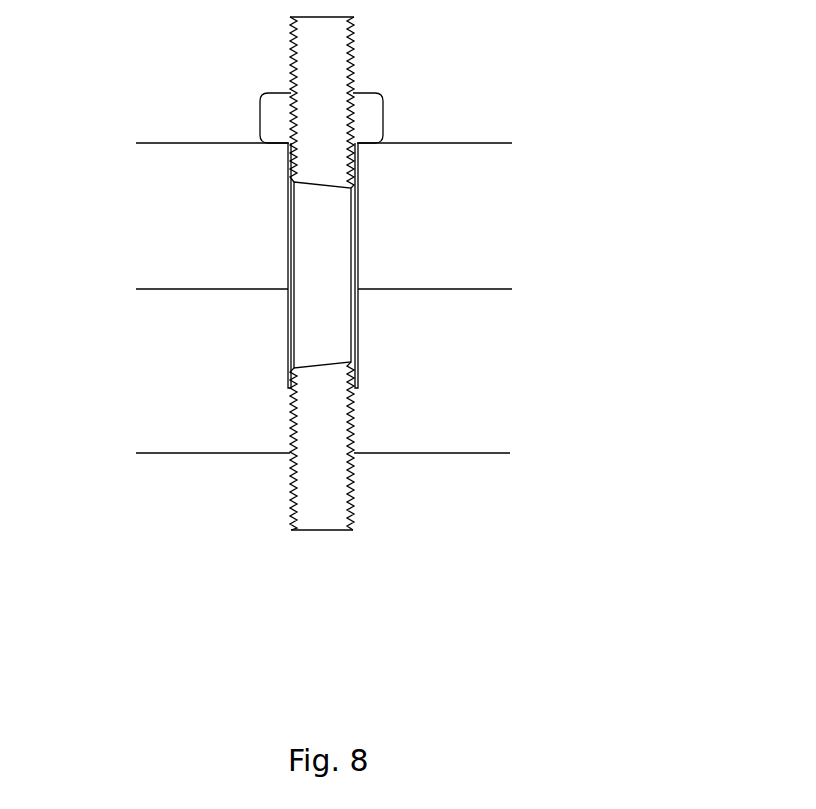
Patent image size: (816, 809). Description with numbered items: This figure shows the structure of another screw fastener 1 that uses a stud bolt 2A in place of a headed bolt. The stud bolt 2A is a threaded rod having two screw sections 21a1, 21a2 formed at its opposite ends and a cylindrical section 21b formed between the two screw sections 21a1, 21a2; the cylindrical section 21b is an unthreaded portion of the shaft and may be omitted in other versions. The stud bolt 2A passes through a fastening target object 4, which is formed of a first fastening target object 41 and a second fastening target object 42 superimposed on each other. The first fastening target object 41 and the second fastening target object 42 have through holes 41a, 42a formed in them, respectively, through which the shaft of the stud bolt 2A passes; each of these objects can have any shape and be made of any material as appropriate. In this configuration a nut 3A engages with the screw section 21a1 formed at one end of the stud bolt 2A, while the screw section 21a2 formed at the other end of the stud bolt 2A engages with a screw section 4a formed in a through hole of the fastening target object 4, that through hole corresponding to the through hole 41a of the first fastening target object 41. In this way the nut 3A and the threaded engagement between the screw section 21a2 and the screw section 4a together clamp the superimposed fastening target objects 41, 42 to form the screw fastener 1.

The screw fastener 1 is at (136, 54).
The stud bolt 2A is at (273, 323).
The nut 3A is at (273, 122).
The fastening target object 4 is at (301, 306).
The first fastening target object 41 is at (323, 405).
The second fastening target object 42 is at (324, 190).
The through hole 41a is at (360, 352).
The through hole 42a is at (360, 238).
The screw section 4a is at (352, 433).
The screw section 21a1 is at (297, 158).
The screw section 21a2 is at (300, 402).
The cylindrical section 21b is at (311, 332).